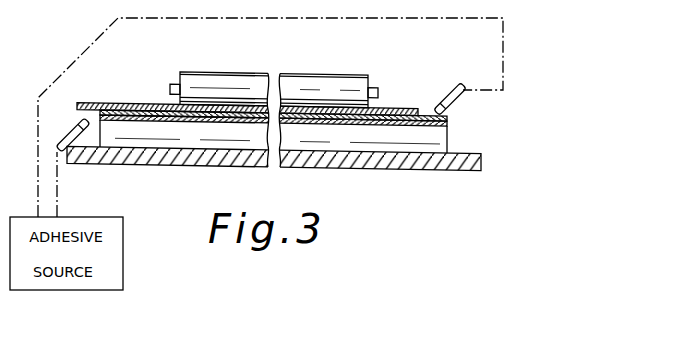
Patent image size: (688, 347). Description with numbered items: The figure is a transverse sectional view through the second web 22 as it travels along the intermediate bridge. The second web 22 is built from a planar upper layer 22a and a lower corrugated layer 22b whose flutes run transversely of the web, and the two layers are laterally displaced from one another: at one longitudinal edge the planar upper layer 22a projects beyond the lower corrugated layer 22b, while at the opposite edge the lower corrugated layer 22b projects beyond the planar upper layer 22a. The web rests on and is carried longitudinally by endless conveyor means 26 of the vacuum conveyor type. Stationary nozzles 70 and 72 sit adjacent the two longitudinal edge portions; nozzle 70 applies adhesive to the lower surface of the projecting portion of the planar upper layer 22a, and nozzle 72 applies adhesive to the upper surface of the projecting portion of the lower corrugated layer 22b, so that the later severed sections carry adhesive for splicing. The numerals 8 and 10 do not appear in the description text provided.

The web 8 is at (0, 58).
The apparatus 10 is at (0, 88).
The second web 22 is at (425, 107).
The planar upper layer 22a is at (93, 104).
The lower corrugated layer 22b is at (449, 136).
The endless conveyor means 26 is at (333, 73).
The stationary nozzle 70 is at (78, 131).
The stationary nozzle 72 is at (465, 92).